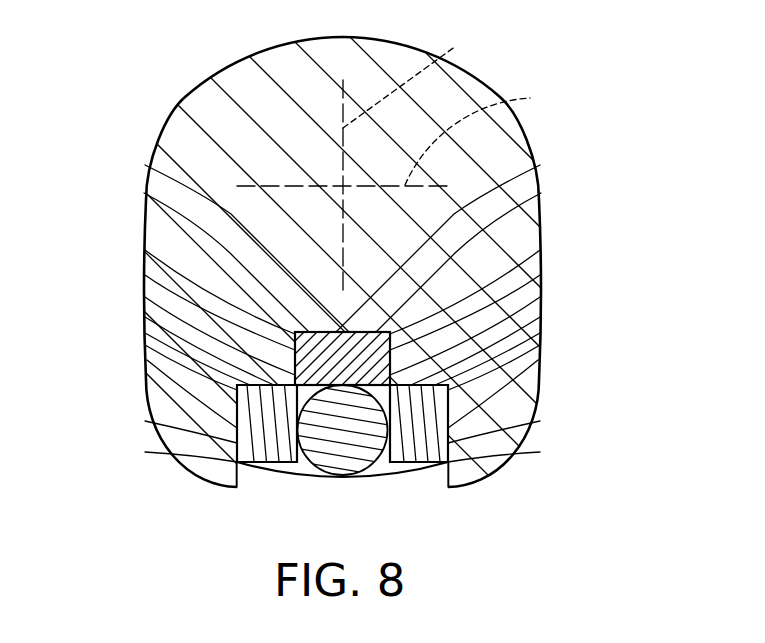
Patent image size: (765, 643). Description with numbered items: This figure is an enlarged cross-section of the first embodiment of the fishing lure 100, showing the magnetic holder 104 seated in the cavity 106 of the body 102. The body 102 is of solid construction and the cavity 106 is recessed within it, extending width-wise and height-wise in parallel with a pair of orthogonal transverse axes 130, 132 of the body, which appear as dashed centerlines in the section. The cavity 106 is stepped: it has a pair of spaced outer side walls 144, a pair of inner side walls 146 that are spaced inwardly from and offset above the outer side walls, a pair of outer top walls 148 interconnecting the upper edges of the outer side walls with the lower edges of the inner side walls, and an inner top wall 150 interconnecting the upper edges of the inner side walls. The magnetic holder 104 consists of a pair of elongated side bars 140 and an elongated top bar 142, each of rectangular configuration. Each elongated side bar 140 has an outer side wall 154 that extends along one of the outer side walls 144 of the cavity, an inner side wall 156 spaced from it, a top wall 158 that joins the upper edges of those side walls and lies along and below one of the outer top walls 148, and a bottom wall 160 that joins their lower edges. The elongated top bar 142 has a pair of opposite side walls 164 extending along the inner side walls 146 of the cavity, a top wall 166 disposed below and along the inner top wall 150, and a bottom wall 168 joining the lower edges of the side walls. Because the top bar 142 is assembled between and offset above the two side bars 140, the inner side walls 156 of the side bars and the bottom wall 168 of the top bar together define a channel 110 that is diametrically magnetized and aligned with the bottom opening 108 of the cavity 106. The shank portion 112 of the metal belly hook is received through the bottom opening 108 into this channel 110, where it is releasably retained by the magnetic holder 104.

The fishing lure 100 is at (546, 32).
The body 102 is at (547, 226).
The magnetic holder 104 is at (420, 364).
The cavity 106 is at (247, 473).
The bottom opening 108 is at (448, 486).
The channel 110 is at (378, 470).
The shank portion 112 is at (311, 473).
The transverse axis 130 is at (490, 136).
The transverse axis 132 is at (370, 163).
The elongated side bars 140 is at (231, 419).
The elongated top bar 142 is at (160, 205).
The outer side walls 144 is at (164, 453).
The inner side walls 146 is at (160, 272).
The outer top walls 148 is at (160, 330).
The inner top wall 150 is at (540, 192).
The outer side wall 154 is at (146, 421).
The inner side wall 156 is at (160, 355).
The top wall 158 is at (158, 298).
The bottom wall 160 is at (289, 465).
The opposite side walls 164 is at (297, 329).
The top wall 166 is at (146, 166).
The bottom wall 168 is at (368, 478).